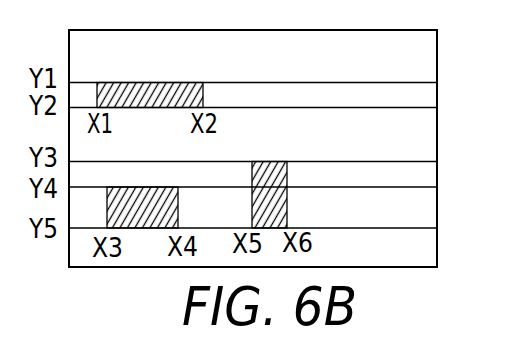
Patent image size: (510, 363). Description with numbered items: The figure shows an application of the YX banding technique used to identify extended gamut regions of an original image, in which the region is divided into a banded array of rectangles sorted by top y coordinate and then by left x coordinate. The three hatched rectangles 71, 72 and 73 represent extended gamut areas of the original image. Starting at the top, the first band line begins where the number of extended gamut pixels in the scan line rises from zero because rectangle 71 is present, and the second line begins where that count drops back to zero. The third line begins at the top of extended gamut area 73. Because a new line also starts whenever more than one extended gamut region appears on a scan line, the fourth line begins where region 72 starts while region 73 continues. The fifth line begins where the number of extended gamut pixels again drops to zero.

The rectangle 71 is at (177, 82).
The rectangle 72 is at (145, 187).
The rectangle 73 is at (273, 161).